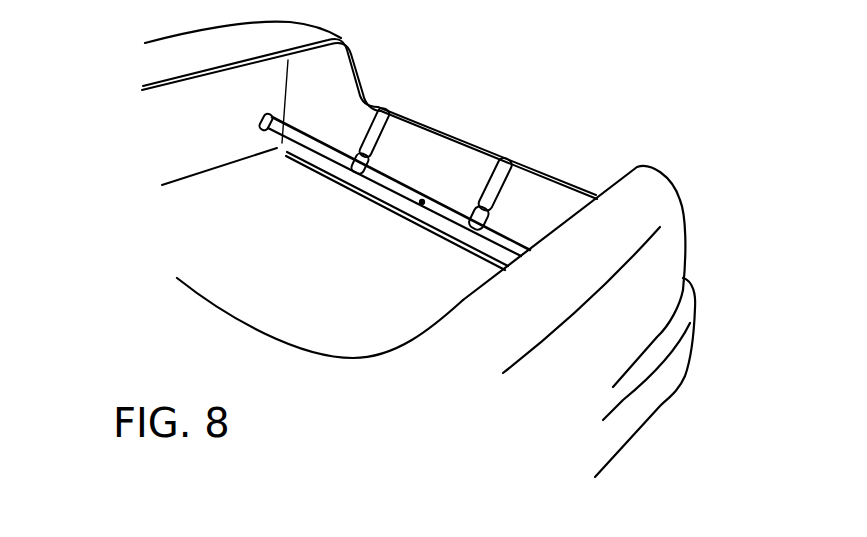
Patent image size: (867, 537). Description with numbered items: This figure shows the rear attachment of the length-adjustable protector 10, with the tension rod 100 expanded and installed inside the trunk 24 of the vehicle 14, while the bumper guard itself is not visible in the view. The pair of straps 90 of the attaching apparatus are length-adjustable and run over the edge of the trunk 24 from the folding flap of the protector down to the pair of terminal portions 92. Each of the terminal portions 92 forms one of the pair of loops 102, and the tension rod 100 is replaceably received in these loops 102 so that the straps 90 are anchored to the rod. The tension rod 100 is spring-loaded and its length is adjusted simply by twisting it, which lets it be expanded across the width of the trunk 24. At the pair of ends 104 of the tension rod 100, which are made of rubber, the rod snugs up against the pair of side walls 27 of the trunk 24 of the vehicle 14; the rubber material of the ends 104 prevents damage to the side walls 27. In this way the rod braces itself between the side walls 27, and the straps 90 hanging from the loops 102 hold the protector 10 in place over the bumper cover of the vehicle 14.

The length-adjustable protector 10 is at (409, 71).
The vehicle 14 is at (698, 228).
The trunk 24 is at (195, 200).
The side walls 27 is at (249, 95).
The straps 90 is at (487, 182).
The terminal portions 92 is at (473, 213).
The tension rod 100 is at (320, 140).
The loops 102 is at (463, 228).
The ends 104 is at (263, 123).